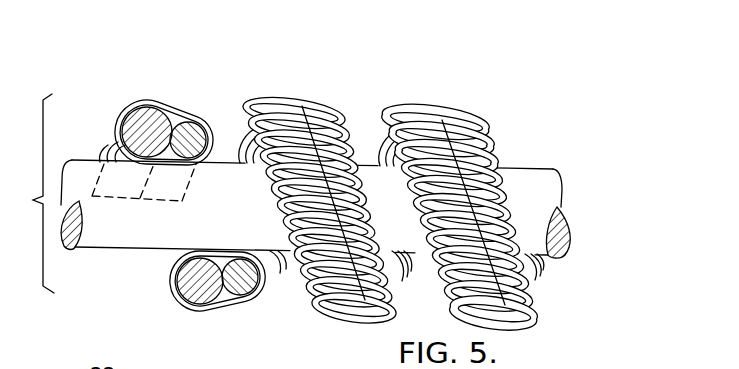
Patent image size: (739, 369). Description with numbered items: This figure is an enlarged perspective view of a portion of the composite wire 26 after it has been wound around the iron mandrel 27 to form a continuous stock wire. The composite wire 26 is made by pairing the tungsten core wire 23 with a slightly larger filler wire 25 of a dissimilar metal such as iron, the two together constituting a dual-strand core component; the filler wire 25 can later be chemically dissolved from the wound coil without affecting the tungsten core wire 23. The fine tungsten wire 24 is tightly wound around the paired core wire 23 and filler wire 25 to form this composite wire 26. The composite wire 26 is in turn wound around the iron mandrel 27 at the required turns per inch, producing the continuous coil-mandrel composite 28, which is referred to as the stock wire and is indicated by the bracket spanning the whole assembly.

The tungsten core wire 23 is at (193, 132).
The fine tungsten wire 24 is at (470, 130).
The filler wire 25 is at (135, 115).
The composite wire 26 is at (400, 112).
The iron mandrel 27 is at (148, 248).
The coil-mandrel composite 28 is at (27, 216).